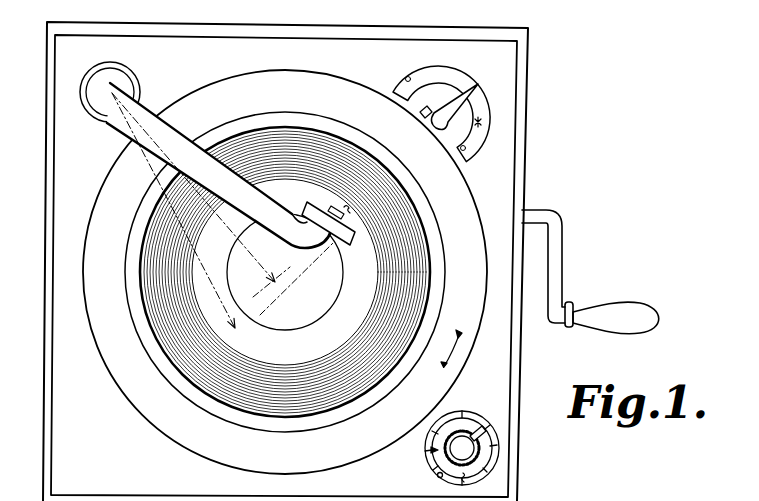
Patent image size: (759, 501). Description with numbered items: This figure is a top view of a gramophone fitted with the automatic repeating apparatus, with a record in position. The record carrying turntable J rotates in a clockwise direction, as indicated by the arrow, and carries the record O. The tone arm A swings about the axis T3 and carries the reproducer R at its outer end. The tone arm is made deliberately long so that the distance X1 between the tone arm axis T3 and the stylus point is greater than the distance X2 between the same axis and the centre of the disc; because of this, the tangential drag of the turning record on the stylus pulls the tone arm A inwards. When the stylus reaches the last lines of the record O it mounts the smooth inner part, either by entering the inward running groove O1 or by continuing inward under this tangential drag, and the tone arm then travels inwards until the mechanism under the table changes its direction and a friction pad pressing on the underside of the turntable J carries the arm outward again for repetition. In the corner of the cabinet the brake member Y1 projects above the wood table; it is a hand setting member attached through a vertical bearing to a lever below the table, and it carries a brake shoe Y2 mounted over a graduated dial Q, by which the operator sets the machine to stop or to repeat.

The tone arm A is at (219, 165).
The axis of rotation of the arms T3 is at (113, 85).
The reproducer R is at (312, 207).
The distance between tone arm axis and stylus point X1 is at (173, 210).
The distance between tone arm axis and disc centre X2 is at (193, 187).
The turntable J is at (107, 350).
The record O is at (155, 360).
The inward running groove O1 is at (367, 300).
The brake member Y1 is at (476, 86).
The brake shoe Y2 is at (425, 115).
The graduated dial Q is at (473, 150).